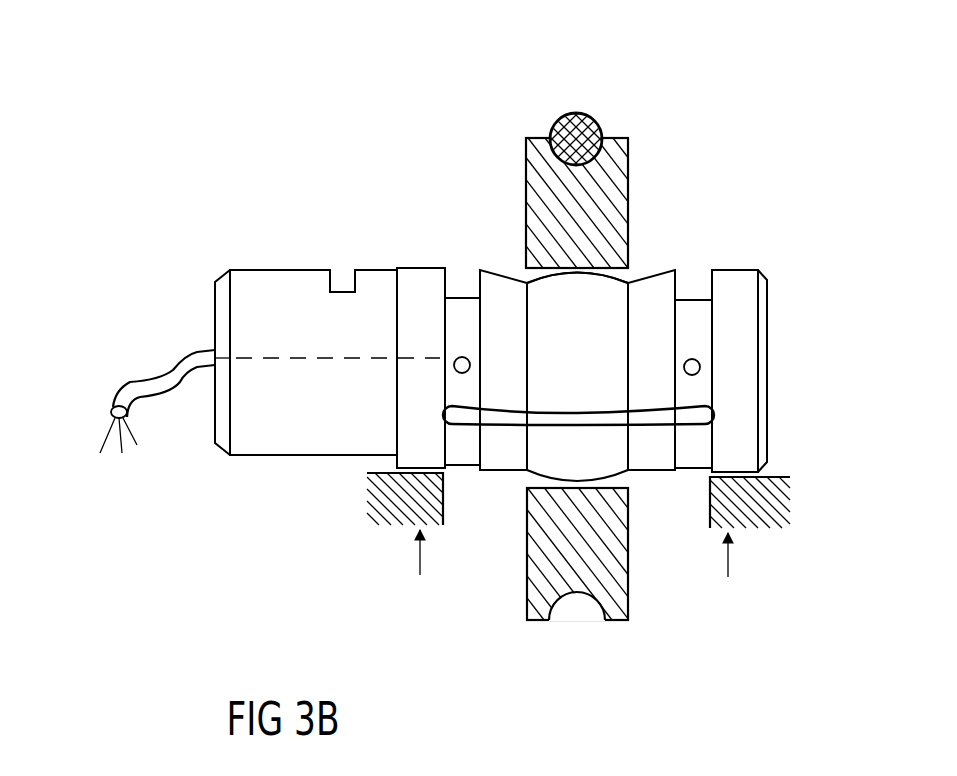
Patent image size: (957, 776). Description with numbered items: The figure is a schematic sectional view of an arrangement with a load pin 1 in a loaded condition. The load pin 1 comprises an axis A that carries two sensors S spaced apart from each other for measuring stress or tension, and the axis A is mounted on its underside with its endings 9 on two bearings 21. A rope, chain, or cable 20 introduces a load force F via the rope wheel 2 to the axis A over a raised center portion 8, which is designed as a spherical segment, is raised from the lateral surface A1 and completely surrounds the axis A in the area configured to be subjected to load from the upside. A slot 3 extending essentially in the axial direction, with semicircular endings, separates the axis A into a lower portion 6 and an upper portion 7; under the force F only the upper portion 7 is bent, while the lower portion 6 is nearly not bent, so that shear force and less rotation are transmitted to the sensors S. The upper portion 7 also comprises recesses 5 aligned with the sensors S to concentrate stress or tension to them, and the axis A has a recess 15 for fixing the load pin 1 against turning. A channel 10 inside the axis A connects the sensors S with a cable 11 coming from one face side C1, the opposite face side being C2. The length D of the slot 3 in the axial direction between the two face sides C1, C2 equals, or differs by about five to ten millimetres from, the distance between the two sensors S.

The load pin 1 is at (305, 292).
The rope wheel 2 is at (622, 164).
The slot 3 is at (700, 417).
The recesses 5 is at (458, 282).
The lower portion 6 is at (645, 455).
The upper portion 7 is at (650, 285).
The center portion 8 is at (530, 266).
The endings 9 is at (420, 475).
The channel 10 is at (276, 349).
The cable 11 is at (127, 392).
The recess 15 is at (342, 286).
The rope, chain, or cable 20 is at (565, 117).
The bearings 21 is at (380, 500).
The sensors S is at (455, 358).
The lateral surface A1 is at (502, 298).
The axis A is at (746, 423).
The face side C1 is at (211, 321).
The face side C2 is at (771, 302).
The force F is at (576, 110).
The length of the slot D is at (462, 373).